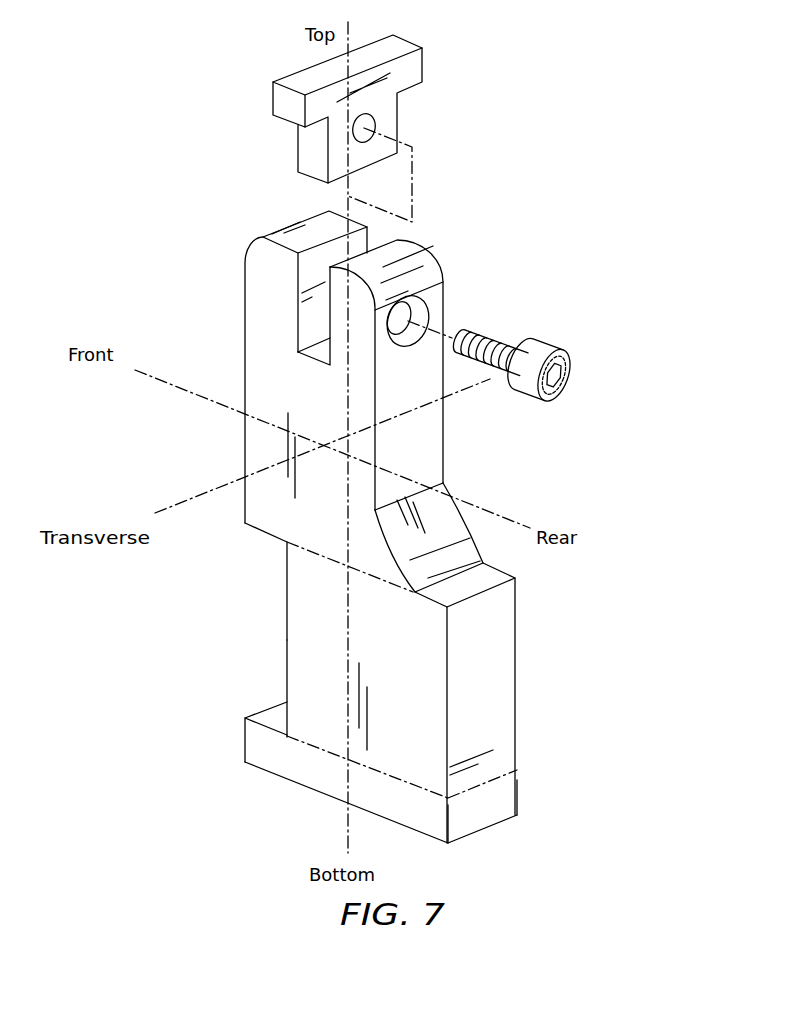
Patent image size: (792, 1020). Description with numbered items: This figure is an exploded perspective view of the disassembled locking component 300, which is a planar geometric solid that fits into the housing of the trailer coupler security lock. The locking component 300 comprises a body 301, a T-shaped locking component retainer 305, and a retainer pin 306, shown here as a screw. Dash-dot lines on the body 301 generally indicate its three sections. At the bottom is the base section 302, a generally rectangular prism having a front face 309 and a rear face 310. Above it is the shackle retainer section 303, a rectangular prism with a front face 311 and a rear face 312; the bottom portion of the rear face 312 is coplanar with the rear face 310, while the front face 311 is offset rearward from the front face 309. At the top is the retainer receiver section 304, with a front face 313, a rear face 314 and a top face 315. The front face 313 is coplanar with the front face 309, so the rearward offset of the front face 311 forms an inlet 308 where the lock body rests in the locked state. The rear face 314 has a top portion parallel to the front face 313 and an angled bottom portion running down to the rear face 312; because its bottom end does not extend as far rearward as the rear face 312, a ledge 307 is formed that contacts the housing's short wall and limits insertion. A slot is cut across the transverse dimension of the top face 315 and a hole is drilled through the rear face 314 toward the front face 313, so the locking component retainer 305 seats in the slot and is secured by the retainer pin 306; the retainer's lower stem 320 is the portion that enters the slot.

The locking component 300 is at (605, 118).
The body 301 is at (510, 710).
The base section 302 is at (270, 772).
The shackle retainer section 303 is at (320, 635).
The retainer receiver section 304 is at (273, 447).
The locking component retainer 305 is at (398, 100).
The retainer pin 306 is at (505, 343).
The ledge 307 is at (503, 568).
The inlet 308 is at (265, 668).
The front face 309 is at (245, 737).
The rear face 310 is at (503, 792).
The front face 311 is at (287, 592).
The rear face 312 is at (497, 620).
The front face 313 is at (243, 368).
The rear face 314 is at (423, 450).
The top face 315 is at (302, 236).
The stem of T-shaped block 320 is at (312, 180).